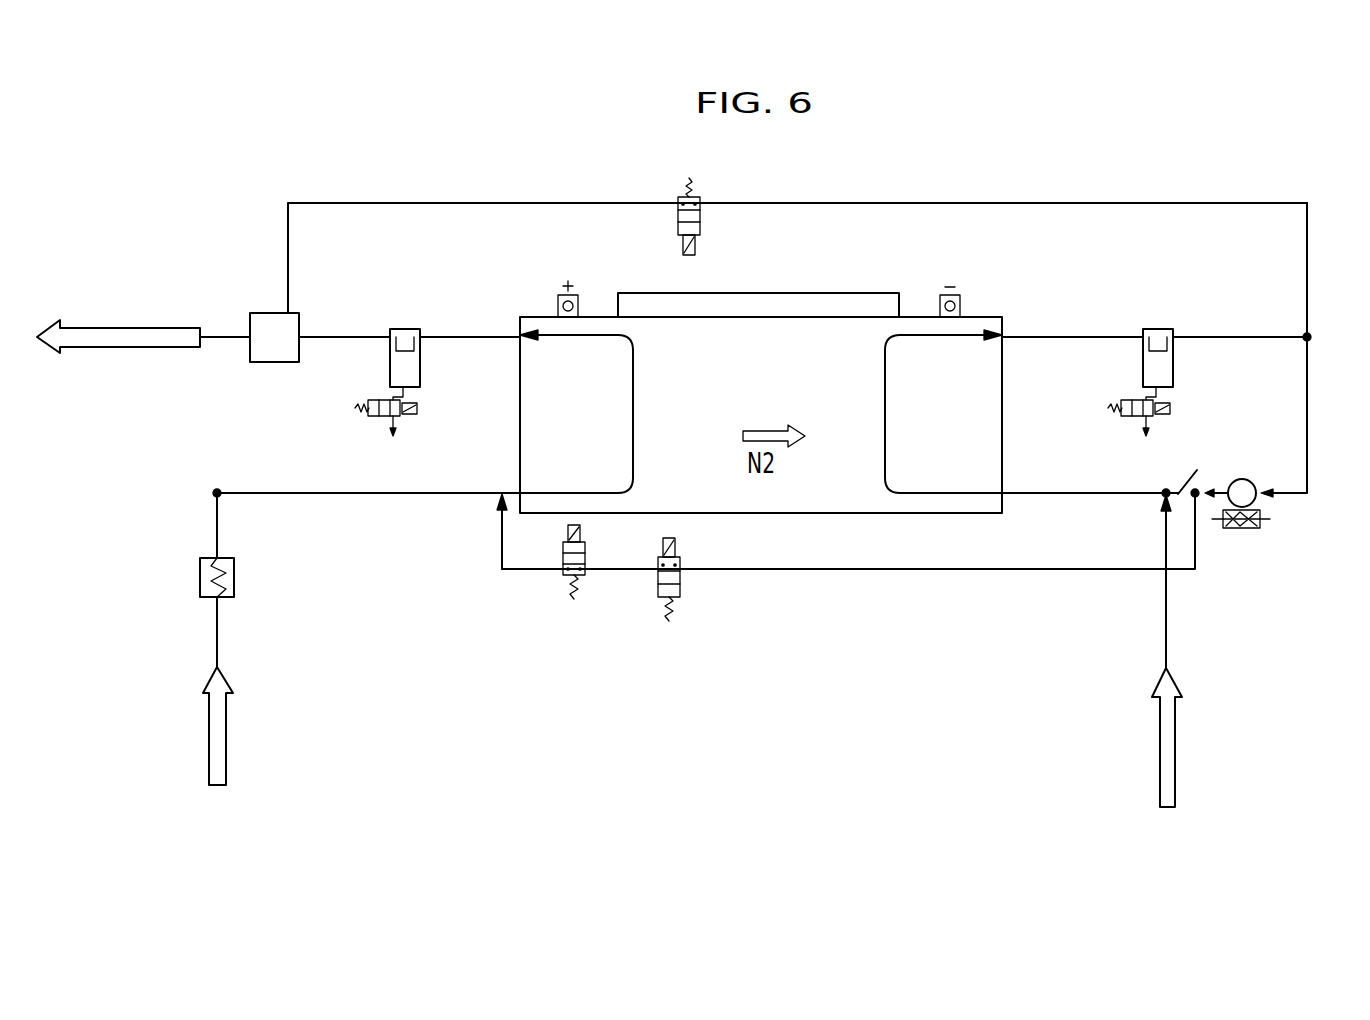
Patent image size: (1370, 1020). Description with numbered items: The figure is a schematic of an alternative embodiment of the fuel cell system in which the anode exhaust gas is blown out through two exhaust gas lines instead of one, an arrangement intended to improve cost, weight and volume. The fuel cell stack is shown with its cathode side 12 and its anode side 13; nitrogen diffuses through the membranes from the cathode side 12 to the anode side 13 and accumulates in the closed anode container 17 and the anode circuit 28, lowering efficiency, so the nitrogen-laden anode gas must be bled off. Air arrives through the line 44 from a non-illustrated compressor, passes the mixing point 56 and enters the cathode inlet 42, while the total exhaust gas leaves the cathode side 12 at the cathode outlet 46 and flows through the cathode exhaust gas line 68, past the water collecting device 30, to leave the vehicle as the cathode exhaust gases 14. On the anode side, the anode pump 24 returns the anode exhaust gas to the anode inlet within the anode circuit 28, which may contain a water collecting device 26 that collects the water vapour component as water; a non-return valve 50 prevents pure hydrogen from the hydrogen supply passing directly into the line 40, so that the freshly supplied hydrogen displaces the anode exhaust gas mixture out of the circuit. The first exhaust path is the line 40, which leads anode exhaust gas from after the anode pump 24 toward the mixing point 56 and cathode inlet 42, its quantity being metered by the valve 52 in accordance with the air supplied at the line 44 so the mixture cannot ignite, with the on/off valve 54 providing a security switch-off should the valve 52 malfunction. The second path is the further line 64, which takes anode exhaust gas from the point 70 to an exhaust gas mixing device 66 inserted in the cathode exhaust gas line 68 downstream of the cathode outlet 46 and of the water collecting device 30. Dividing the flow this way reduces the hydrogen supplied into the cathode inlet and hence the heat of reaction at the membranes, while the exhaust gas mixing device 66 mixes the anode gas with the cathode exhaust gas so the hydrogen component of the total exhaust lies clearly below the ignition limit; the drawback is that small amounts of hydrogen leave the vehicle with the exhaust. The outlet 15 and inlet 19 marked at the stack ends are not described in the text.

The cathode side 12 is at (628, 397).
The anode side 13 is at (894, 395).
The cathode exhaust gases 14 is at (132, 337).
The outlet 15 is at (1005, 492).
The closed container 17 is at (1310, 412).
The inlet 19 is at (1002, 340).
The anode pump 24 is at (1246, 529).
The water collecting device 26 is at (1172, 366).
The anode circuit 28 is at (1044, 335).
The water collecting device 30 is at (415, 368).
The line 40 is at (853, 570).
The cathode inlet 42 is at (520, 492).
The line 44 is at (221, 737).
The cathode outlet 46 is at (520, 335).
The non-return valve 50 is at (1188, 478).
The valve 52 is at (562, 580).
The on/off valve 54 is at (664, 598).
The mixing point 56 is at (496, 502).
The further line 64 is at (833, 202).
The exhaust gas mixing device 66 is at (272, 312).
The cathode exhaust gas line 68 is at (356, 335).
The point 70 is at (1308, 336).